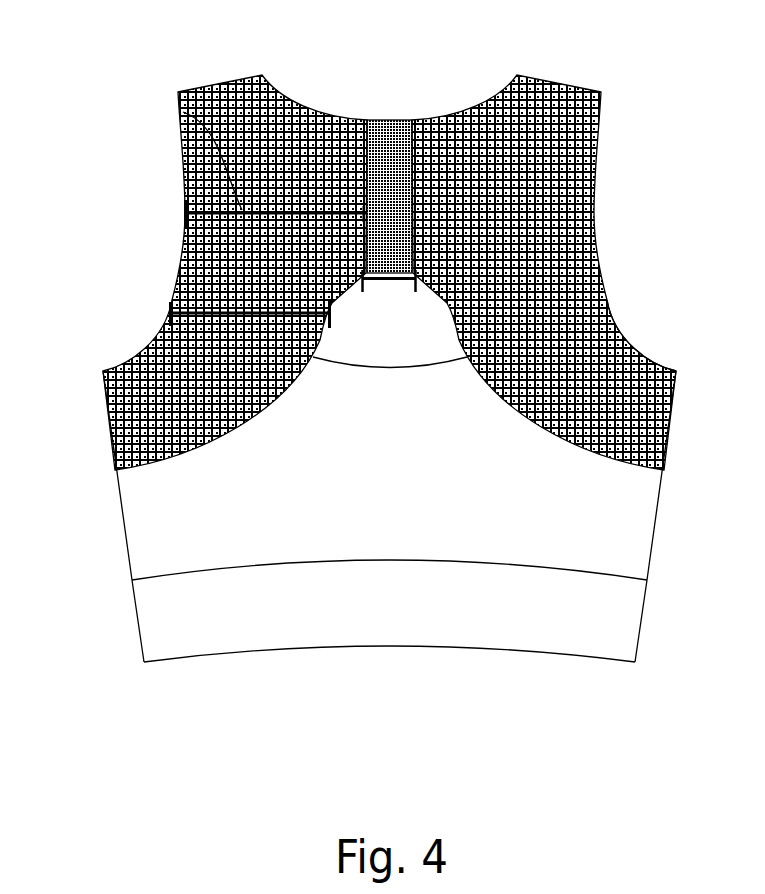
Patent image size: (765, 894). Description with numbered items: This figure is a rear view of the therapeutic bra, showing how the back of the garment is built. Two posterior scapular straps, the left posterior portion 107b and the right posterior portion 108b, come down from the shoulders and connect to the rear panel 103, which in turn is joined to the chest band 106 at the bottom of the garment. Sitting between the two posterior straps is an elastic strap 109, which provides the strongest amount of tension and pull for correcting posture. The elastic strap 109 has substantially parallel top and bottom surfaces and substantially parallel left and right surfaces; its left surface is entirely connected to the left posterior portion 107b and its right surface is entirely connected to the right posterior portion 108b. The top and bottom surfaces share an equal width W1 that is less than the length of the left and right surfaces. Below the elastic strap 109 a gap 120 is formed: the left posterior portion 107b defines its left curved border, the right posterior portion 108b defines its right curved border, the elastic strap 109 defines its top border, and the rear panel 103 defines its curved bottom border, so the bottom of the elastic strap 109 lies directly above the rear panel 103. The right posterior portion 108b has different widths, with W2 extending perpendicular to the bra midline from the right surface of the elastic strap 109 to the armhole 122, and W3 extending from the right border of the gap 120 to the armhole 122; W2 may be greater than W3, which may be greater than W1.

The rear panel 103 is at (145, 522).
The chest band 106 is at (162, 620).
The left posterior portion 107b is at (186, 205).
The right posterior portion 108b is at (578, 183).
The elastic strap 109 is at (383, 125).
The gap 120 is at (432, 337).
The armhole 122 is at (598, 285).
The width of elastic strap W1 is at (397, 282).
The first width of right posterior portion W2 is at (183, 112).
The second width of right posterior portion W3 is at (172, 303).